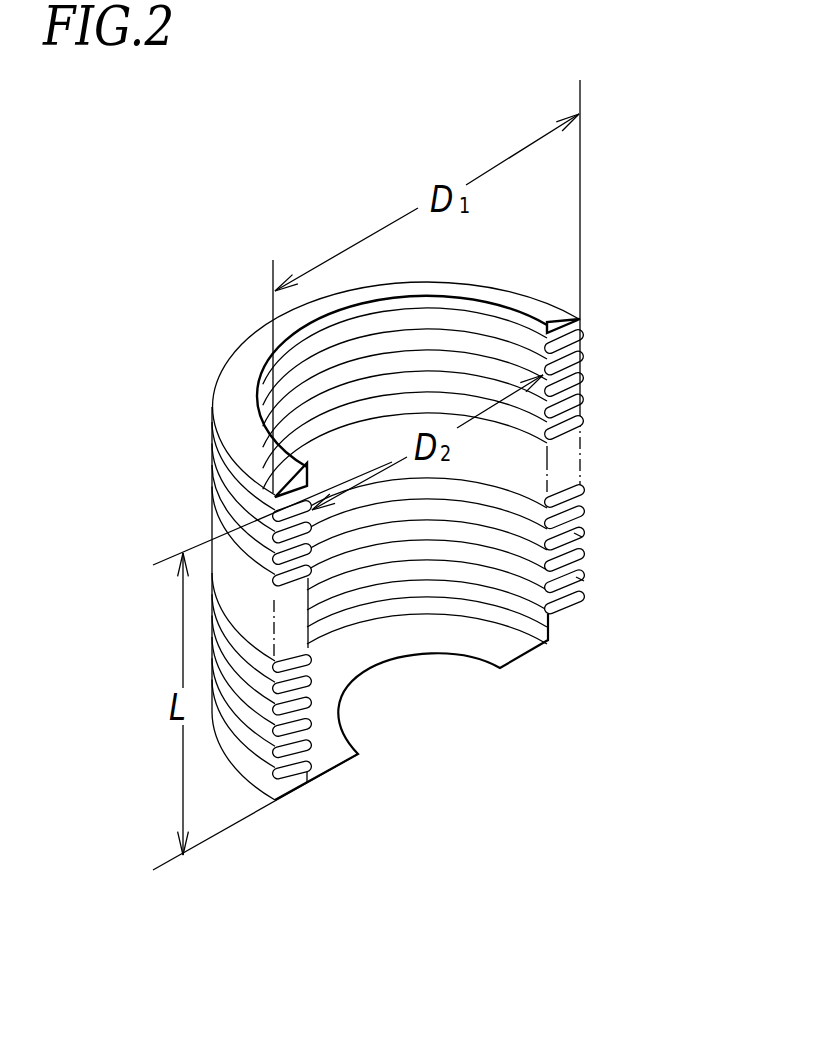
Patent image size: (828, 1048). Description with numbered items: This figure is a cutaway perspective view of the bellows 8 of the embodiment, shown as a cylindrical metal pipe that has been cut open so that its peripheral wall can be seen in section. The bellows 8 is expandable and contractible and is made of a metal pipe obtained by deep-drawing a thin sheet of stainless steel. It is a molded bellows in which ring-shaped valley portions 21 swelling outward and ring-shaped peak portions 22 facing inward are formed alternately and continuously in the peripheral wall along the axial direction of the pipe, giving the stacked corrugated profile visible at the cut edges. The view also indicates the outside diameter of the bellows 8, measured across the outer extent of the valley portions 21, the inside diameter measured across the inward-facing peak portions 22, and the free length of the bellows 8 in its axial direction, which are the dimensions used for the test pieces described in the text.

The bellows 8 is at (452, 531).
The valley portions 21 is at (577, 578).
The peak portions 22 is at (582, 580).